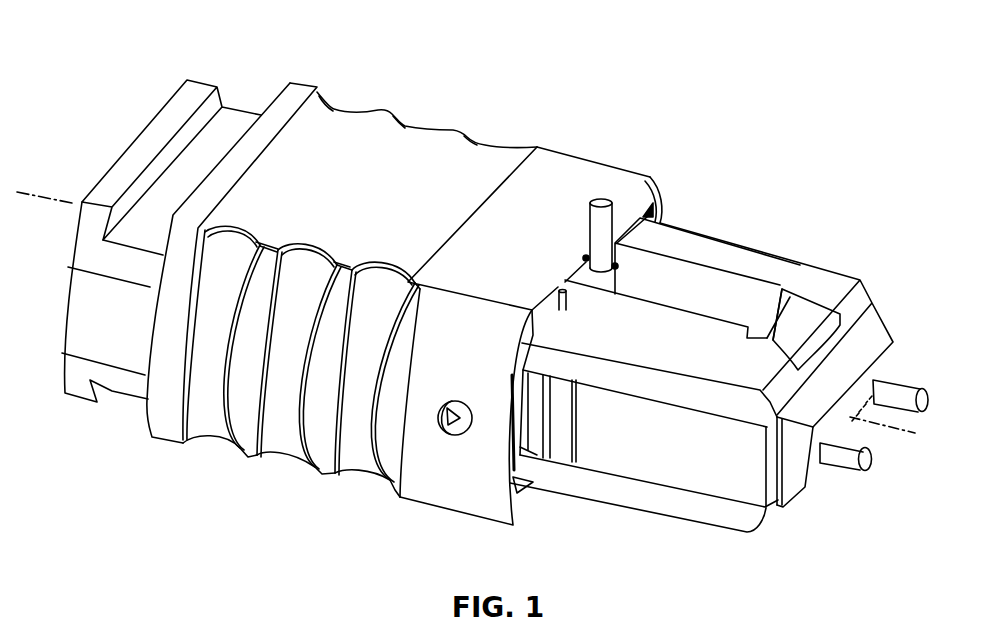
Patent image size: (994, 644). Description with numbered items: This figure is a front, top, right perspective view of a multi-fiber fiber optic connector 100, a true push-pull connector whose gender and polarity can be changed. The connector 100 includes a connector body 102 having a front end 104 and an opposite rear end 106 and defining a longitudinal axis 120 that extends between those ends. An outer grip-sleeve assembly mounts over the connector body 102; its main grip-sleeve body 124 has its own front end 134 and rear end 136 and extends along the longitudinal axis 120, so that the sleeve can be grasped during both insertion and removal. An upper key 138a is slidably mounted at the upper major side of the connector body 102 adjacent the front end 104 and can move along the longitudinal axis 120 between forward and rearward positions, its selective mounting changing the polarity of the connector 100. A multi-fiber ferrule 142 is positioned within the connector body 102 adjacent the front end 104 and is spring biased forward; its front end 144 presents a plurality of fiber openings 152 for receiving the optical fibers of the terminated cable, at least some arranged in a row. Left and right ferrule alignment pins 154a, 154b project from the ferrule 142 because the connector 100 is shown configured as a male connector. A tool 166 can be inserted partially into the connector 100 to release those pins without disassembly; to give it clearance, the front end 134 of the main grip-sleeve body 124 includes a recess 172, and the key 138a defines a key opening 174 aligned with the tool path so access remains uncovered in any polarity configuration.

The multi-fiber fiber optic connector 100 is at (727, 108).
The connector body 102 is at (687, 512).
The front end 104 is at (860, 290).
The rear end 106 is at (190, 82).
The longitudinal axis 120 is at (37, 192).
The main grip-sleeve body 124 is at (463, 135).
The front end 134 is at (650, 173).
The rear end 136 is at (293, 97).
The upper key 138a is at (727, 275).
The multi-fiber ferrule 142 is at (812, 467).
The front end 144 is at (800, 487).
The fiber openings 152 is at (853, 422).
The left ferrule alignment pin 154a is at (928, 395).
The right ferrule alignment pin 154b is at (866, 462).
The tool 166 is at (655, 190).
The recess 172 is at (588, 200).
The key opening 174 is at (607, 283).